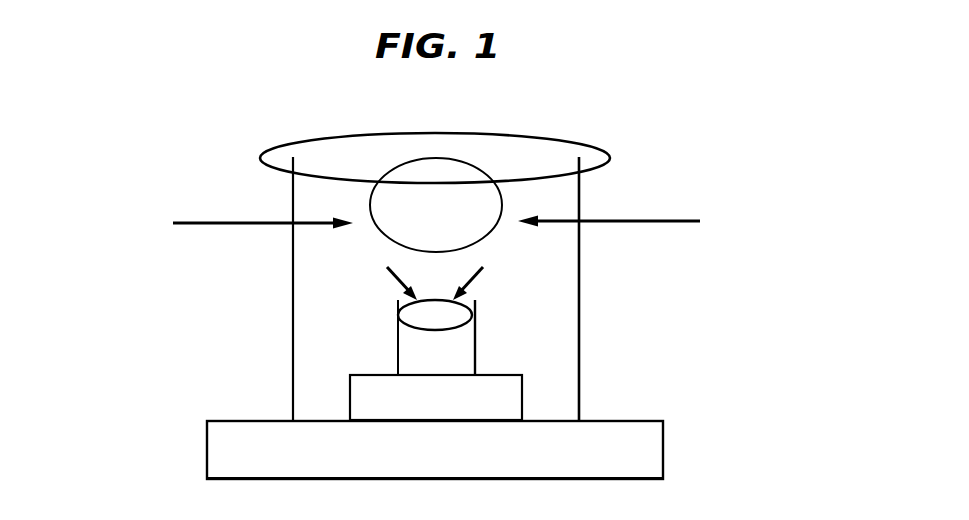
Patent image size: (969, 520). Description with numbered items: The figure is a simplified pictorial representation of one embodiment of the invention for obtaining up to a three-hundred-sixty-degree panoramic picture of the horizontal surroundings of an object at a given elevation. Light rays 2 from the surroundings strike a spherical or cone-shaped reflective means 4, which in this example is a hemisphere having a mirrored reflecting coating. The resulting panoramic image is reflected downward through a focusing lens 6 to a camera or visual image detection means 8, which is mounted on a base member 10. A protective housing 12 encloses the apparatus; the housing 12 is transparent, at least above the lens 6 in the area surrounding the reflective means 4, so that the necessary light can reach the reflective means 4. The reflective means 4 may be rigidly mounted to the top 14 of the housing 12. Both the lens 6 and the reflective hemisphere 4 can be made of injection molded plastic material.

The light rays 2 is at (663, 199).
The reflective means 4 is at (485, 236).
The focusing lens 6 is at (445, 326).
The camera or visual image detection means 8 is at (522, 400).
The base member 10 is at (663, 440).
The protective housing 12 is at (579, 324).
The top 14 is at (519, 139).